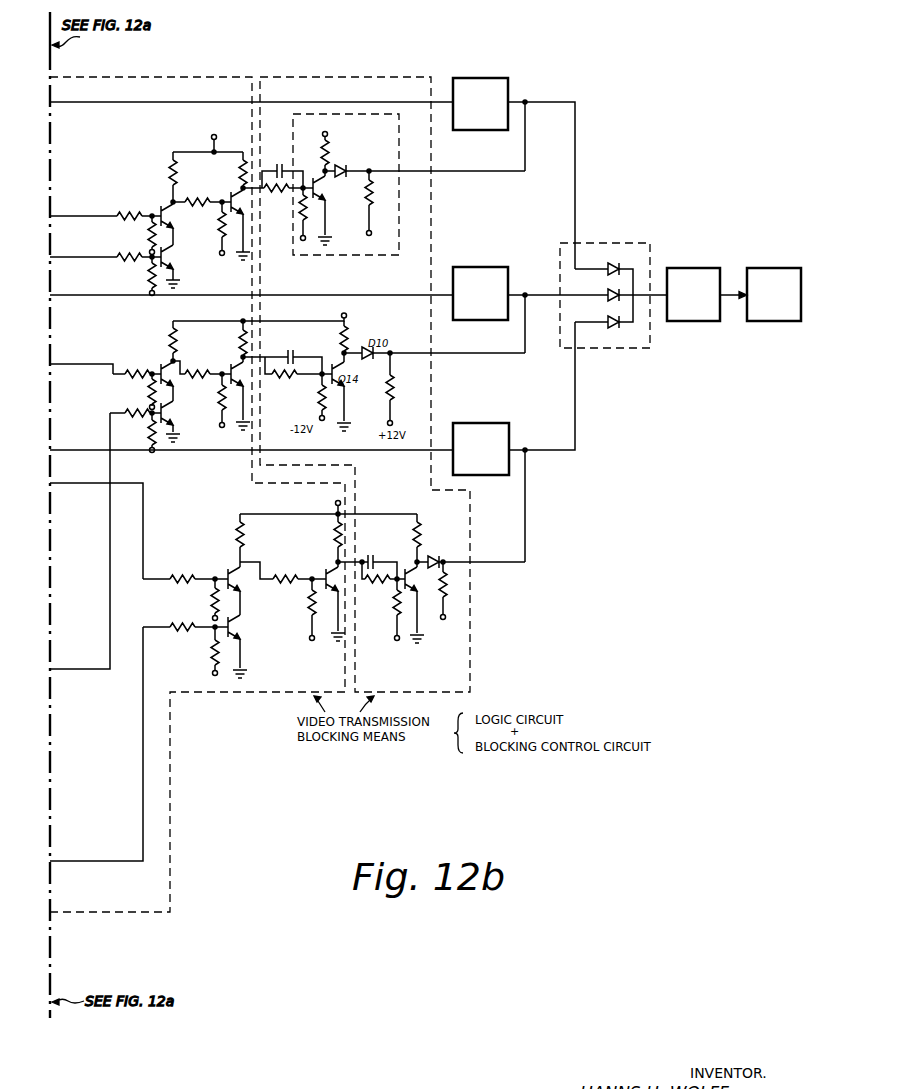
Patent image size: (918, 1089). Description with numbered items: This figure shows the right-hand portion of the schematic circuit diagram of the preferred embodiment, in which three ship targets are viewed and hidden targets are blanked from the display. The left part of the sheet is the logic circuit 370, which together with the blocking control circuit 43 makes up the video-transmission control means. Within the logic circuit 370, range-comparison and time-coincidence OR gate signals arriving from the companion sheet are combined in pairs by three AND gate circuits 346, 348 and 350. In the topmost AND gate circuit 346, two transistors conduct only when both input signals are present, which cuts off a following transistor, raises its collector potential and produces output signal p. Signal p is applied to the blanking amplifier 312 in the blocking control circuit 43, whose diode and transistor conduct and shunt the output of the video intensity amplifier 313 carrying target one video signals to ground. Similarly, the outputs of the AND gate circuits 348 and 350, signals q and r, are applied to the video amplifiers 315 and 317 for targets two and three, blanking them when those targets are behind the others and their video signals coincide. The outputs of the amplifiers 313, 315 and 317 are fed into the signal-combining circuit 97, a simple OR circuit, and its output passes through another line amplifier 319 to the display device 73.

The logic circuit 370 is at (118, 77).
The blocking control circuit 43 is at (364, 77).
The blanking amplifier 312 is at (377, 258).
The video intensity amplifier 313 is at (490, 78).
The video amplifier 315 is at (490, 267).
The video amplifier 317 is at (480, 423).
The signal-combining circuit 97 is at (600, 243).
The line amplifier 319 is at (687, 268).
The display device 73 is at (760, 268).
The AND gate circuit 346 is at (191, 261).
The AND gate circuit 348 is at (194, 412).
The AND gate circuit 350 is at (250, 646).